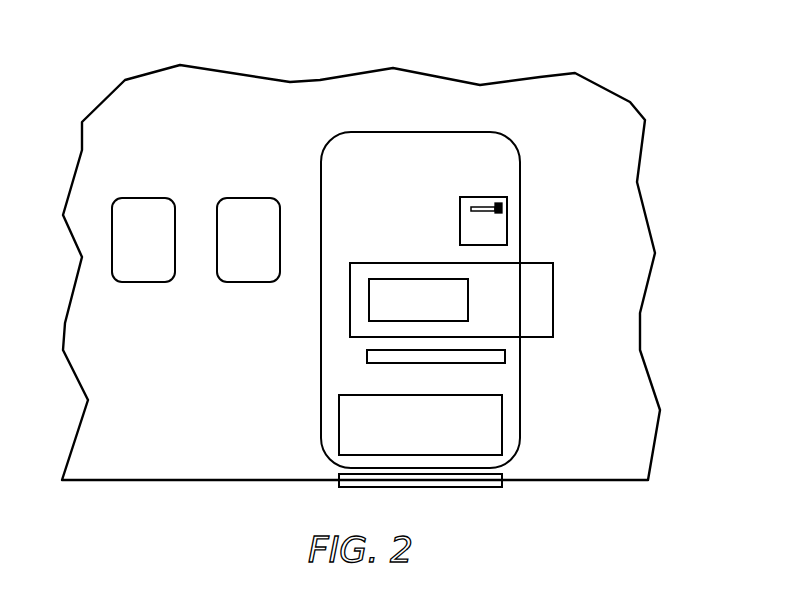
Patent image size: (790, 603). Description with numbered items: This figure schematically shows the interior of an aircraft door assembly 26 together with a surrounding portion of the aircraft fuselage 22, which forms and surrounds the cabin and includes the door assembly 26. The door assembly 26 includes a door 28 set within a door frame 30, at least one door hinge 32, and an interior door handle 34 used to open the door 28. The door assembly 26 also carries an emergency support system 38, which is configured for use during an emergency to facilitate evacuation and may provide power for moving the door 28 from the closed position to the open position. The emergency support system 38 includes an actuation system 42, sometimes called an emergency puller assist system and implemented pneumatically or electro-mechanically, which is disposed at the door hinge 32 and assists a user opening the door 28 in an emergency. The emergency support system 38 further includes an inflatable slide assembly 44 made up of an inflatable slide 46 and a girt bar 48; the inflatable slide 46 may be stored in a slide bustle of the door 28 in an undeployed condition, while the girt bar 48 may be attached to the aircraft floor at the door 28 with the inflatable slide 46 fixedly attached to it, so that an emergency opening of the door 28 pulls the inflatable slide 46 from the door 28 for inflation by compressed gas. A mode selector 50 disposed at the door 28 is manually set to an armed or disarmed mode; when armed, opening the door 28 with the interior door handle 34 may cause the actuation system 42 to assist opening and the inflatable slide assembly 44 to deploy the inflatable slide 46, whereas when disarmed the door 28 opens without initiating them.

The fuselage 22 is at (242, 120).
The door assembly 26 is at (550, 99).
The door 28 is at (338, 372).
The door frame 30 is at (372, 249).
The door hinge 32 is at (527, 299).
The interior door handle 34 is at (483, 355).
The emergency support system 38 is at (533, 202).
The actuation system 42 is at (405, 314).
The inflatable slide assembly 44 is at (475, 425).
The inflatable slide 46 is at (407, 439).
The girt bar 48 is at (463, 478).
The mode selector 50 is at (492, 232).